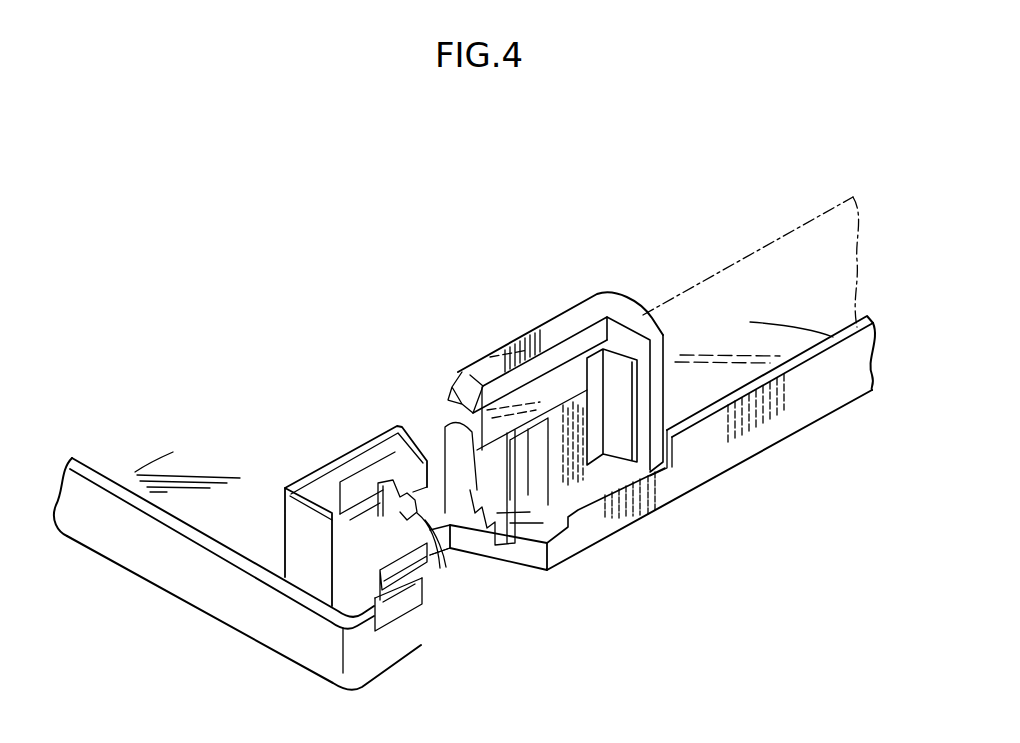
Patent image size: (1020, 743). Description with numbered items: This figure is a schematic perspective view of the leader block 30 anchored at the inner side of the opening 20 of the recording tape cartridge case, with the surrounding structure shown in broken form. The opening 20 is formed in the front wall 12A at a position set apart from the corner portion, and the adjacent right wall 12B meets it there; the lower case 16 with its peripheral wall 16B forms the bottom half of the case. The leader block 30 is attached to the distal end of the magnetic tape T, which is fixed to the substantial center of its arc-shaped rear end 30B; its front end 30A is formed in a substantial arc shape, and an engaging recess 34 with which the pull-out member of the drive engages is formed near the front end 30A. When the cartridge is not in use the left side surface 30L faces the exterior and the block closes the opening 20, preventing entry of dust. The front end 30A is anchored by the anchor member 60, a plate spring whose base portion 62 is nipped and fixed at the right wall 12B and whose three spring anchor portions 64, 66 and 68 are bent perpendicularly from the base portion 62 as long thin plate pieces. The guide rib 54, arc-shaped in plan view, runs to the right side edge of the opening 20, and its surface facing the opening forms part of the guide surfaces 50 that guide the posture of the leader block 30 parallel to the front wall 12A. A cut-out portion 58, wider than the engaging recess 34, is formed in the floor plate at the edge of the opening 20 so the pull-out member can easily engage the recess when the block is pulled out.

The front wall 12A is at (812, 400).
The right wall 12B is at (162, 560).
The lower case 16 is at (117, 450).
The peripheral wall 16B is at (730, 447).
The opening 20 is at (486, 556).
The leader block 30 is at (541, 300).
The front end 30A is at (437, 466).
The rear end 30B is at (617, 294).
The left side surface 30L is at (567, 487).
The engaging recess 34 is at (456, 404).
The guide surfaces 50 is at (410, 597).
The guide rib 54 is at (407, 605).
The cut-out portion 58 is at (523, 558).
The anchor member 60 is at (285, 487).
The base portion 62 is at (307, 567).
The spring anchor portion 64 is at (400, 490).
The spring anchor portion 66 is at (410, 568).
The spring anchor portion 68 is at (407, 594).
The magnetic tape T is at (771, 257).